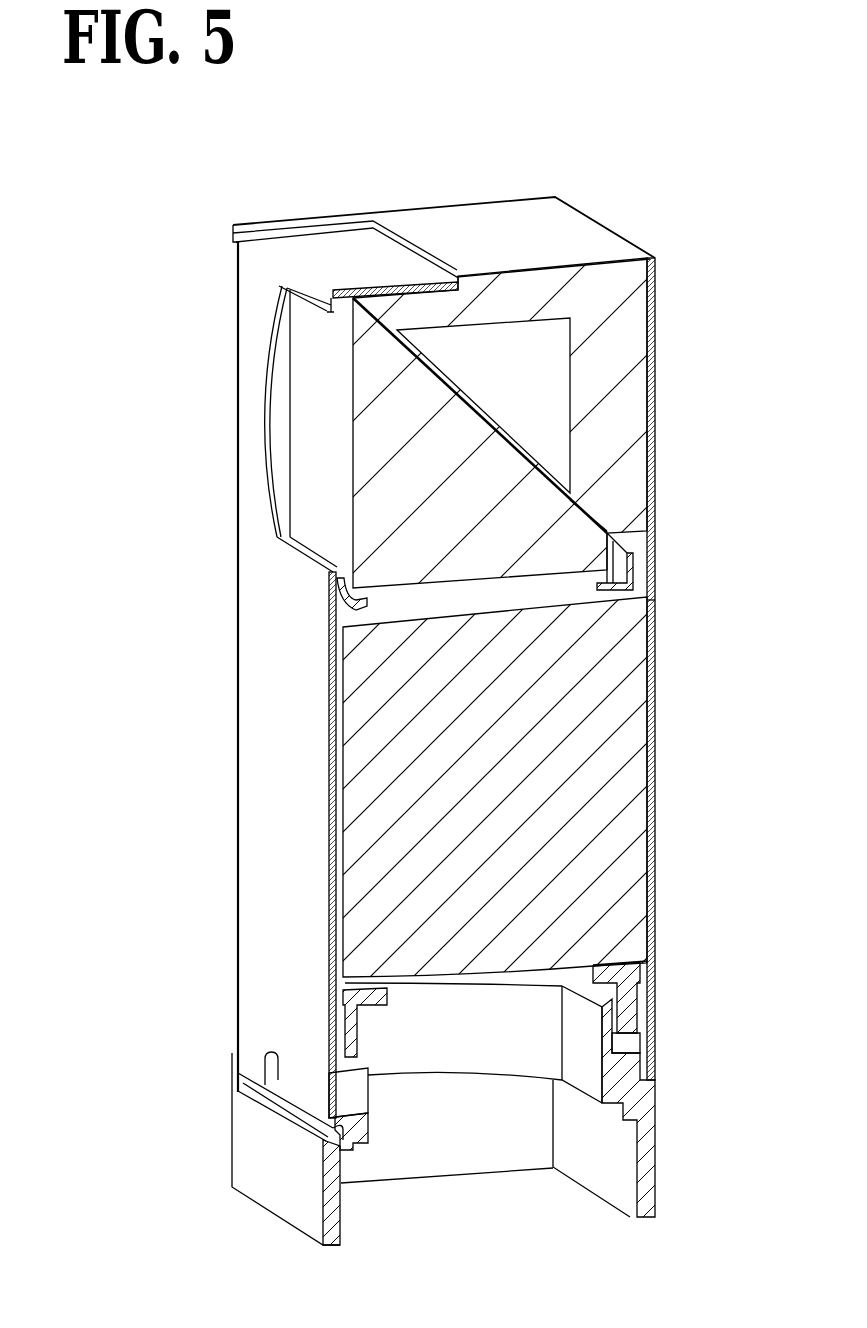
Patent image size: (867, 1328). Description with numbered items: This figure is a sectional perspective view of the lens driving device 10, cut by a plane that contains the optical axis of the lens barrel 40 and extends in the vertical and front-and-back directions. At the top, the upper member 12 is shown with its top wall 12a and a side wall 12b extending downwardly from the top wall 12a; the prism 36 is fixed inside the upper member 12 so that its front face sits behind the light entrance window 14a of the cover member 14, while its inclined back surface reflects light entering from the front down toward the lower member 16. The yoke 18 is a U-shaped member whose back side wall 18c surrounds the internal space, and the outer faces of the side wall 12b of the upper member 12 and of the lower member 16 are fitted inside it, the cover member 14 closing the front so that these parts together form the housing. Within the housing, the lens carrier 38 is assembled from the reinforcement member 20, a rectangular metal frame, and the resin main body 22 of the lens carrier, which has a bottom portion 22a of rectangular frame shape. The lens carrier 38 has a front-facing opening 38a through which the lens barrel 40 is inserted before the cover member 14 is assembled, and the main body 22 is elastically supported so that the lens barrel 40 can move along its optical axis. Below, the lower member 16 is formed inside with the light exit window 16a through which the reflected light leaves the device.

The lens driving device 10 is at (627, 163).
The upper member 12 is at (503, 195).
The top wall 12a is at (423, 217).
The side walls 12b is at (633, 383).
The cover member 14 is at (237, 680).
The light entrance window 14a is at (268, 380).
The prism 36 is at (297, 470).
The reinforcement member 20 is at (632, 577).
The yoke 18 is at (658, 660).
The back side wall 18c is at (650, 708).
The opening 38a is at (340, 795).
The lens barrel 40 is at (630, 780).
The bottom portion 22a is at (640, 992).
The main body of the lens carrier 22 is at (335, 1003).
The lens carrier 38 is at (633, 1022).
The lower member 16 is at (655, 1148).
The light exit window 16a is at (470, 1050).